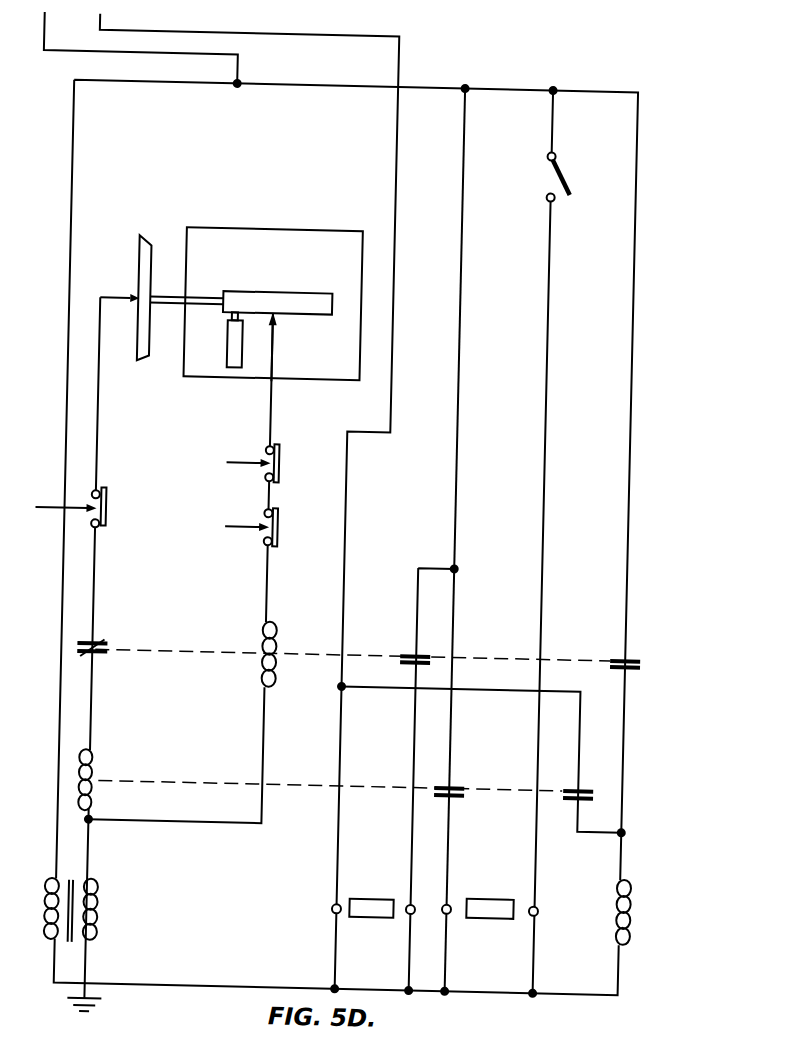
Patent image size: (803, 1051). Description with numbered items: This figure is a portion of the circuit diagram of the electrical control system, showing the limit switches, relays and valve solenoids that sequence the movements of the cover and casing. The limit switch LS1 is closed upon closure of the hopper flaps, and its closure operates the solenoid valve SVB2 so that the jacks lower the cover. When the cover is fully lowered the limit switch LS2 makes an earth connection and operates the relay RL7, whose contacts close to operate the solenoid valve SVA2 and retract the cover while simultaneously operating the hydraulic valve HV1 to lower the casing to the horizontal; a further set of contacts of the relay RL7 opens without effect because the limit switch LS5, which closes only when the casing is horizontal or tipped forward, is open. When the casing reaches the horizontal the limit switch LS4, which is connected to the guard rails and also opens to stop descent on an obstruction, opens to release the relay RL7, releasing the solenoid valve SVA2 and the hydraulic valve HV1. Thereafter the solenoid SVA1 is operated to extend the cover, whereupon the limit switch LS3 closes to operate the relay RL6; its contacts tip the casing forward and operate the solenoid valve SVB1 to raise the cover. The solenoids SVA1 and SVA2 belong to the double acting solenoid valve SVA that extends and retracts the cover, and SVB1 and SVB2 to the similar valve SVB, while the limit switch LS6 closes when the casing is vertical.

The limit switch LS1 is at (546, 177).
The limit switch LS2 is at (272, 305).
The limit switch LS3 is at (161, 298).
The limit switch LS4 is at (271, 463).
The limit switch LS5 is at (89, 507).
The limit switch LS6 is at (270, 527).
The relay RL6 is at (101, 775).
The relay RL7 is at (279, 658).
The double acting solenoid valve SVA is at (371, 897).
The solenoid SVA1 is at (314, 909).
The solenoid valve SVA2 is at (426, 906).
The solenoid valve SVB is at (490, 898).
The solenoid valve SVB1 is at (470, 895).
The solenoid valve SVB2 is at (558, 904).
The hydraulic valve HV1 is at (604, 912).